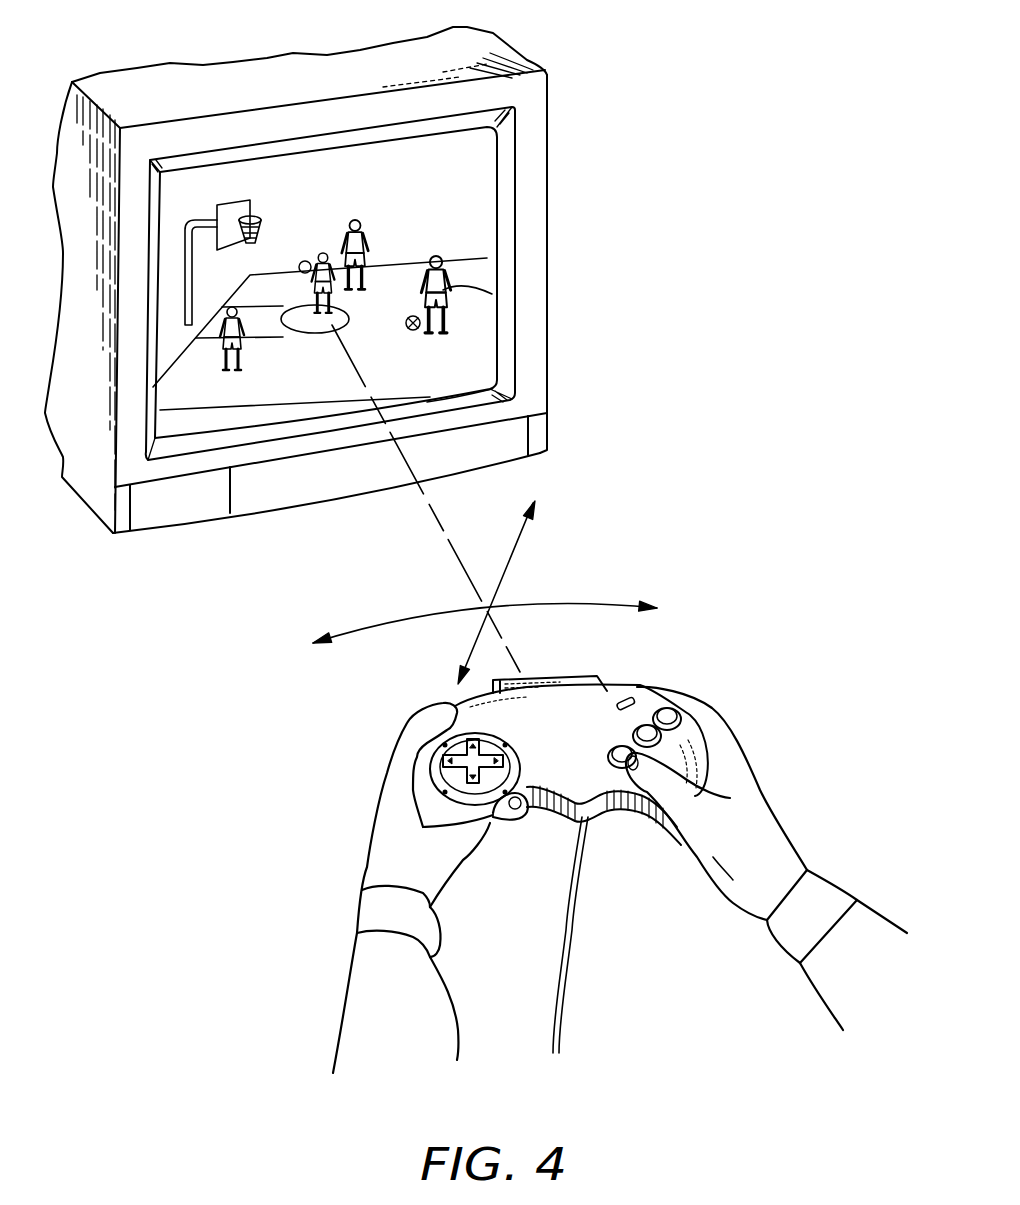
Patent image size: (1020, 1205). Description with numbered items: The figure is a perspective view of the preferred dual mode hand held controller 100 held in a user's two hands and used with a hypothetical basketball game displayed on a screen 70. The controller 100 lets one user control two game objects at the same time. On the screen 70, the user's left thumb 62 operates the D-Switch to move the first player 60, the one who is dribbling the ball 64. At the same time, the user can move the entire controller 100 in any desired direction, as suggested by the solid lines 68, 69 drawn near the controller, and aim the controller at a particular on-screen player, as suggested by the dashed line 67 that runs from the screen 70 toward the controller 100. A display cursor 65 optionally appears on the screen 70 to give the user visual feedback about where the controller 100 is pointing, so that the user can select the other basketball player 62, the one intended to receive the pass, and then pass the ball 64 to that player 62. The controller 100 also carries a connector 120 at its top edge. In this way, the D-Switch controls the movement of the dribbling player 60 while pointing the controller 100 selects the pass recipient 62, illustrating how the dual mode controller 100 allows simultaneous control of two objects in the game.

The screen 70 is at (498, 211).
The first player 60 is at (455, 286).
The player 62 is at (318, 262).
The display cursor 65 is at (305, 263).
The ball 64 is at (413, 331).
The dashed line 67 is at (433, 510).
The solid line 68 is at (503, 574).
The solid line 69 is at (413, 615).
The dual mode hand held controller 100 is at (615, 686).
The controller connector 120 is at (568, 674).